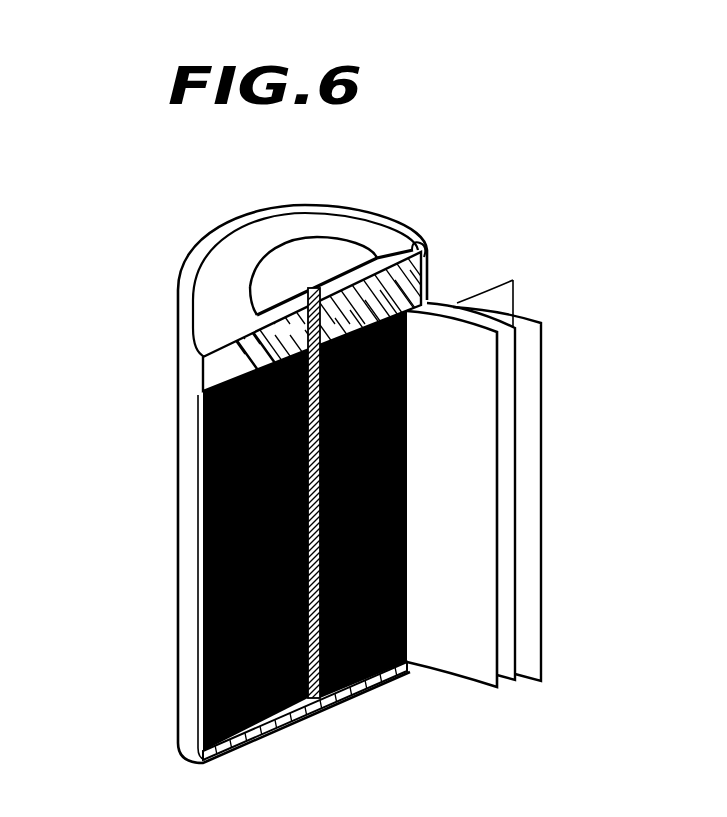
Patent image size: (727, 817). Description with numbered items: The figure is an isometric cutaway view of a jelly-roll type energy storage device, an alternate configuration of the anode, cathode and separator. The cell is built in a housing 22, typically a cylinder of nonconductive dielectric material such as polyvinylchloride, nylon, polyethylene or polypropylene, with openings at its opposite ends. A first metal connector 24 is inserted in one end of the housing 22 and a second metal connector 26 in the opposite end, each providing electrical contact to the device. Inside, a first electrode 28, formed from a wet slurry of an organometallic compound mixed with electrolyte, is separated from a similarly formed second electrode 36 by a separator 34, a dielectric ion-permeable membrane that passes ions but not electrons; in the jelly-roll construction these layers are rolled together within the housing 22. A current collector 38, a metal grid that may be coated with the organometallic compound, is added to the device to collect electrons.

The housing 22 is at (190, 570).
The first metal connector 24 is at (315, 722).
The second metal connector 26 is at (328, 258).
The first electrode 28 is at (527, 412).
The separator 34 is at (505, 300).
The second electrode 36 is at (470, 540).
The current collector 38 is at (200, 360).